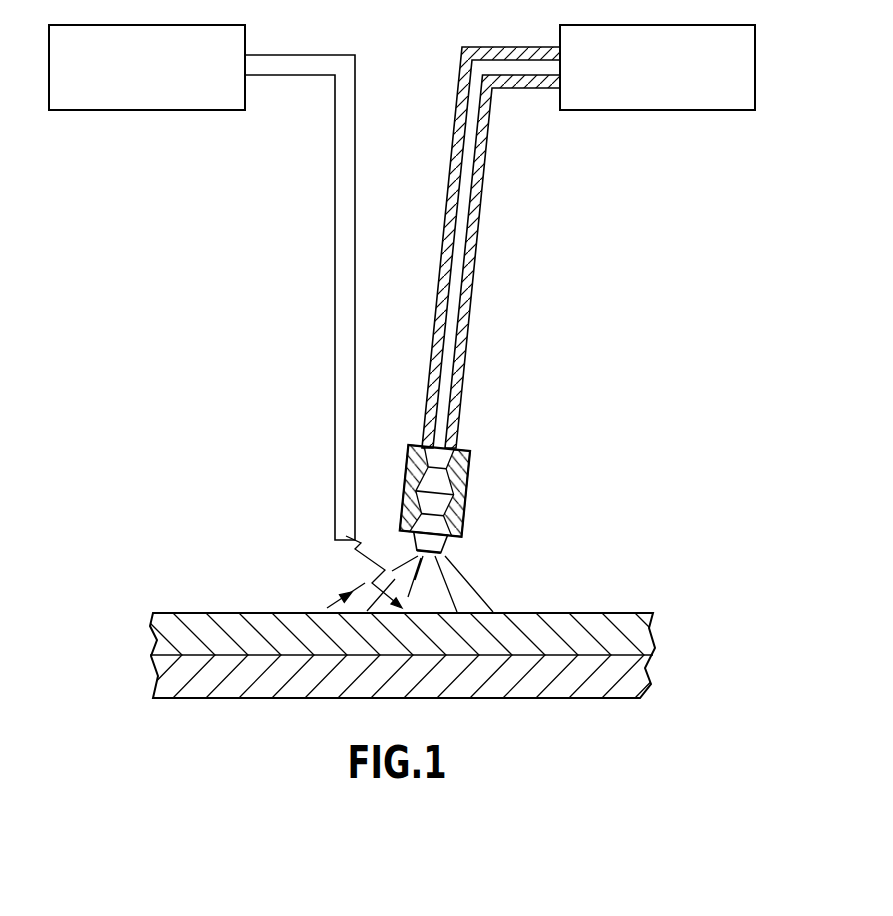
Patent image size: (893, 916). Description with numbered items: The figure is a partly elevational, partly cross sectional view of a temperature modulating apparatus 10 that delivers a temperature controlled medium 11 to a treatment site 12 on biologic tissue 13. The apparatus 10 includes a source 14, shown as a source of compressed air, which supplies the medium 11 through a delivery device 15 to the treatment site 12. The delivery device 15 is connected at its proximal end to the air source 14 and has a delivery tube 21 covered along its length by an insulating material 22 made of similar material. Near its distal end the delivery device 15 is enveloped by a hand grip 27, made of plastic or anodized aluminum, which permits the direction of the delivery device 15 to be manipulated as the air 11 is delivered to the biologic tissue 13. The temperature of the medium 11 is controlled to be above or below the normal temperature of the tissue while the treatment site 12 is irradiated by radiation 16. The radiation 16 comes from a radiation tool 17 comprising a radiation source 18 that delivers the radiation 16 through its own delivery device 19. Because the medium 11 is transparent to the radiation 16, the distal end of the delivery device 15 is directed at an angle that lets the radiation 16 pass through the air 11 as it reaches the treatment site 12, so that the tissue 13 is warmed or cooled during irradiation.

The apparatus 10 is at (527, 322).
The temperature controlled medium 11 is at (458, 597).
The treatment site 12 is at (343, 593).
The biologic tissue 13 is at (567, 630).
The source 14 is at (746, 111).
The delivery device 15 is at (491, 247).
The radiation 16 is at (368, 558).
The radiation tool 17 is at (344, 386).
The radiation source 18 is at (70, 111).
The delivery device 19 is at (343, 313).
The delivery tube 21 is at (464, 229).
The insulating material 22 is at (481, 182).
The hand grip 27 is at (430, 542).